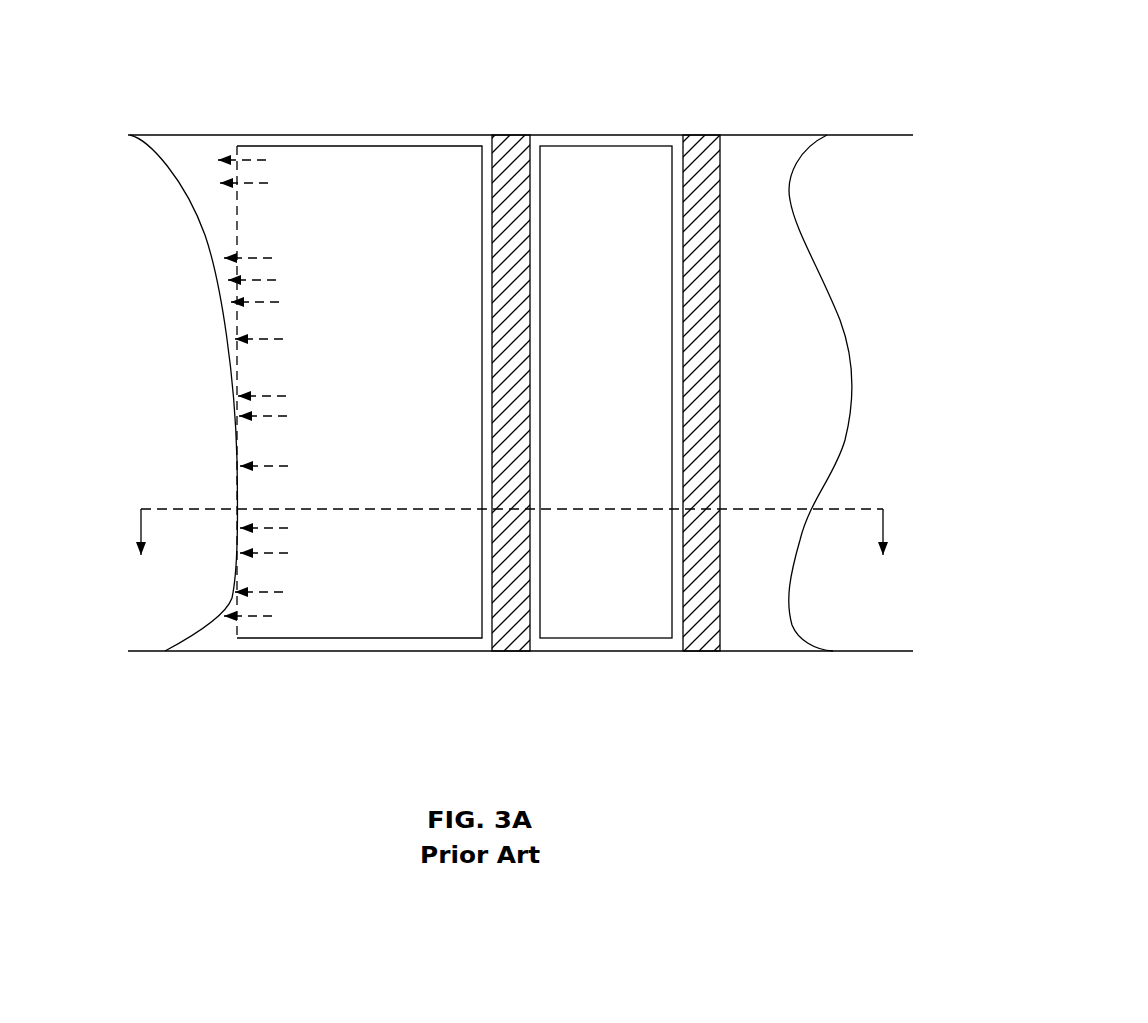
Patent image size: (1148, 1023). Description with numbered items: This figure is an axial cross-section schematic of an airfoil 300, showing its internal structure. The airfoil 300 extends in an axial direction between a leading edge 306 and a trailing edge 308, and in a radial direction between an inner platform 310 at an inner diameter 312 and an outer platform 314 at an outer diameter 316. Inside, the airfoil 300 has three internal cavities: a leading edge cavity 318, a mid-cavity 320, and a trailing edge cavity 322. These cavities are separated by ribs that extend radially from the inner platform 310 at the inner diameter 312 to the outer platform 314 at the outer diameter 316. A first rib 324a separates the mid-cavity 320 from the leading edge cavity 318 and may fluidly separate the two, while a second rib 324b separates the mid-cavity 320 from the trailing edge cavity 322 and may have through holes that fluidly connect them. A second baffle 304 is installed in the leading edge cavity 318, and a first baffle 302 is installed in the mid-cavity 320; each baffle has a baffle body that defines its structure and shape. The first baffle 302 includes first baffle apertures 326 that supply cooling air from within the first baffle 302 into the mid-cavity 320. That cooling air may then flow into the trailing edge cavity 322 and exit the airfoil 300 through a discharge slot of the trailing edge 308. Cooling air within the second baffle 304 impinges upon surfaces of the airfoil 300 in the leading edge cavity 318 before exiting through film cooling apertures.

The airfoil 300 is at (850, 43).
The first baffle 302 is at (630, 145).
The second baffle 304 is at (360, 146).
The leading edge 306 is at (224, 377).
The trailing edge 308 is at (833, 311).
The inner platform 310 is at (150, 652).
The inner diameter 312 is at (117, 650).
The outer platform 314 is at (166, 135).
The outer diameter 316 is at (117, 134).
The leading edge cavity 318 is at (217, 150).
The mid-cavity 320 is at (538, 144).
The trailing edge cavity 322 is at (744, 154).
The first rib 324a is at (530, 480).
The second rib 324b is at (720, 448).
The first baffle apertures 326 is at (258, 231).